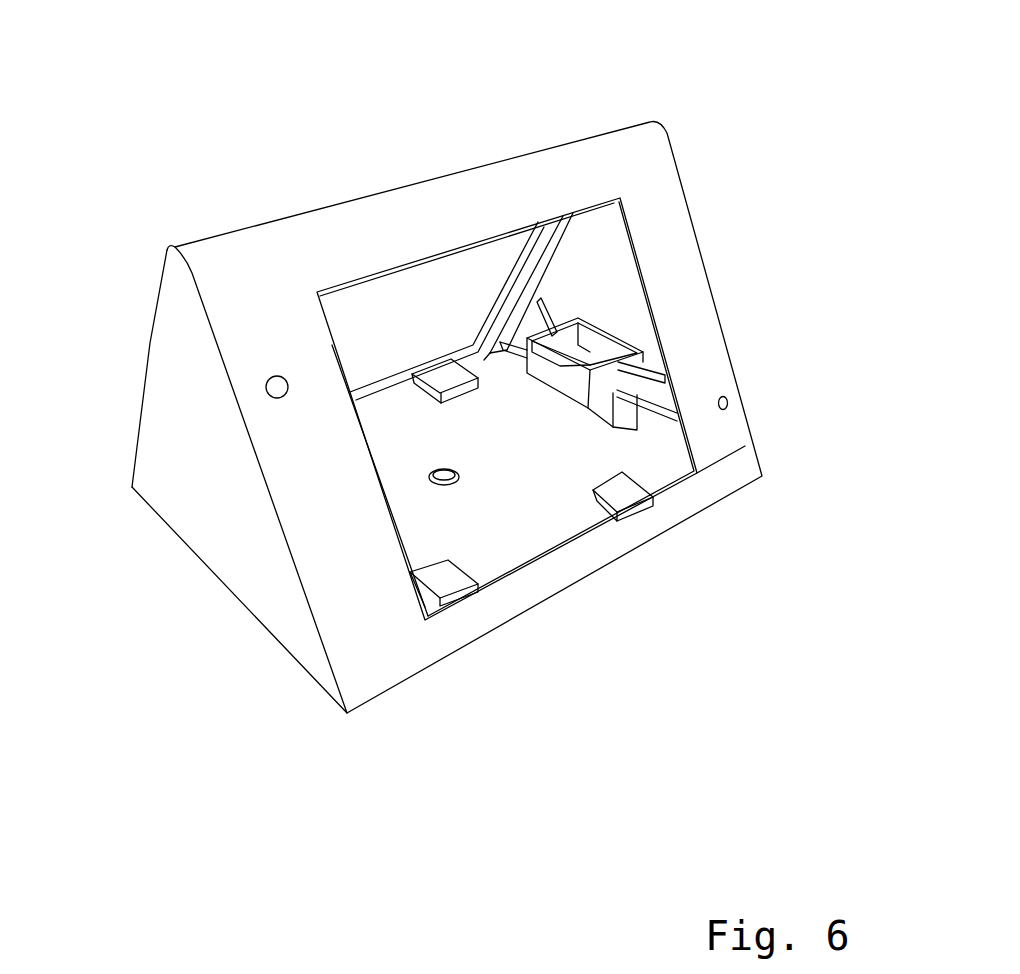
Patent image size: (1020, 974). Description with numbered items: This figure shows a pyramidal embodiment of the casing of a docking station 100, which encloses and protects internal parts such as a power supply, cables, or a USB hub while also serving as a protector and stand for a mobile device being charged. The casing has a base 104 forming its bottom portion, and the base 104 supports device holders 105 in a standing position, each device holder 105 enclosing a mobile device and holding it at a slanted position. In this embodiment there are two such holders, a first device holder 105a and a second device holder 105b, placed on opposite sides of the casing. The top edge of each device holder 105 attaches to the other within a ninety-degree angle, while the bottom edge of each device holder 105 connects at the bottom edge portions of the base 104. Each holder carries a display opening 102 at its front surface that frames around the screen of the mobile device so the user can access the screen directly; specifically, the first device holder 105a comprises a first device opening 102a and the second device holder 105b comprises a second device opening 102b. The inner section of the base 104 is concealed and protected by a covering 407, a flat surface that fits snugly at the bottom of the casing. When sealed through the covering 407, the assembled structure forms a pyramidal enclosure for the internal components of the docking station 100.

The docking station 100 is at (447, 369).
The display opening 102 is at (553, 440).
The first device opening 102a is at (650, 464).
The second device opening 102b is at (460, 391).
The base 104 is at (192, 480).
The device holder 105 is at (525, 409).
The first device holder 105a is at (752, 371).
The second device holder 105b is at (104, 368).
The covering 407 is at (537, 589).